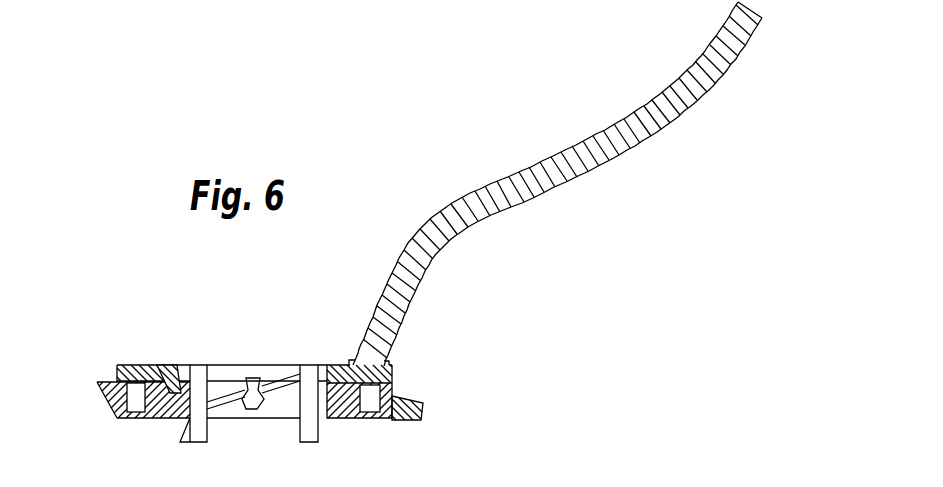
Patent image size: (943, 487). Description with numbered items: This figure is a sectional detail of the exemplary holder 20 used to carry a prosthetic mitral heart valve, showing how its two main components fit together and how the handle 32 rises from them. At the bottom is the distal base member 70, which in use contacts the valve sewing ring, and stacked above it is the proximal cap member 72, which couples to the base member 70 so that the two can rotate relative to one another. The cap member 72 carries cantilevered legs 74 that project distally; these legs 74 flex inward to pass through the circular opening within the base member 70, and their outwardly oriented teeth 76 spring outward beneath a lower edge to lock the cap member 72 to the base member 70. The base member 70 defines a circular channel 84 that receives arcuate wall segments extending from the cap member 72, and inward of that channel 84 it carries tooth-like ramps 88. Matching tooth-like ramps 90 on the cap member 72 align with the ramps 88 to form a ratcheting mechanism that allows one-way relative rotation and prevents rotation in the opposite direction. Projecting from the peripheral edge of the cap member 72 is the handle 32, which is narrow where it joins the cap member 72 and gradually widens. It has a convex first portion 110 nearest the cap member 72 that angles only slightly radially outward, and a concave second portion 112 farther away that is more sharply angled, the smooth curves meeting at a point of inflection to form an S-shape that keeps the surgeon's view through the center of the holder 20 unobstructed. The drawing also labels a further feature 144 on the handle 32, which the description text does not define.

The holder 20 is at (222, 359).
The handle 32 is at (590, 184).
The base member 70 is at (101, 400).
The cap member 72 is at (114, 369).
The cantilevered legs 74 is at (298, 428).
The teeth 76 is at (335, 428).
The circular channel 84 is at (147, 362).
The tooth-like ramps 88 is at (251, 387).
The tooth-like ramps 90 is at (252, 409).
The first portion 110 is at (460, 236).
The second portion 112 is at (727, 68).
The outer surface of strap 144 is at (530, 160).